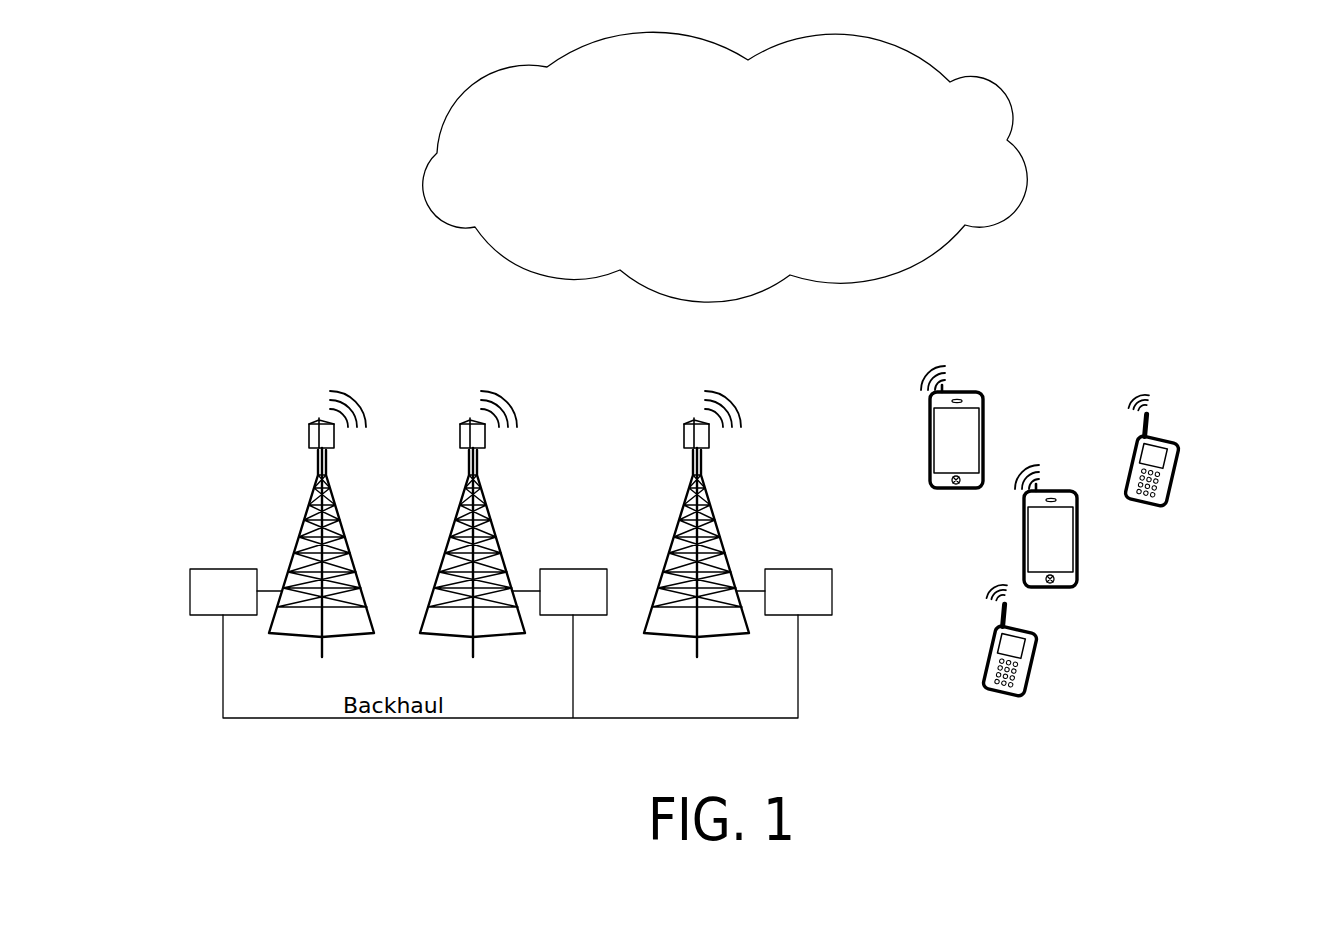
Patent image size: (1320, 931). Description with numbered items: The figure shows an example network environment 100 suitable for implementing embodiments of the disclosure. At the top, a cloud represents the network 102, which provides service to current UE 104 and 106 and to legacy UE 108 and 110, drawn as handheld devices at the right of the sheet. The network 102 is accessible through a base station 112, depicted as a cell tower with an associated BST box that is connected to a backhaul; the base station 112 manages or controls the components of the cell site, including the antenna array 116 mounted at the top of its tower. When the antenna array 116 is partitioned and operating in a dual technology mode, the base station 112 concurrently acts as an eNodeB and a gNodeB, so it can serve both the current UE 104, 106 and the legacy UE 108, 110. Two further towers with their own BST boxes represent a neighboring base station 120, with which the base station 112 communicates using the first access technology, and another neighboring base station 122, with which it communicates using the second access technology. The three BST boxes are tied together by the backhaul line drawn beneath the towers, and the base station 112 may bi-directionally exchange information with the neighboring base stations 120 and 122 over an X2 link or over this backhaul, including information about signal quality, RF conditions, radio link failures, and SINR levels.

The network environment 100 is at (205, 120).
The network 102 is at (704, 179).
The current UE 104 is at (985, 435).
The current UE 106 is at (1077, 535).
The legacy UE 108 is at (1037, 653).
The legacy UE 110 is at (1180, 475).
The base station 112 is at (798, 569).
The antenna array 116 is at (710, 430).
The neighboring base station 120 is at (573, 569).
The neighboring base station 122 is at (223, 569).